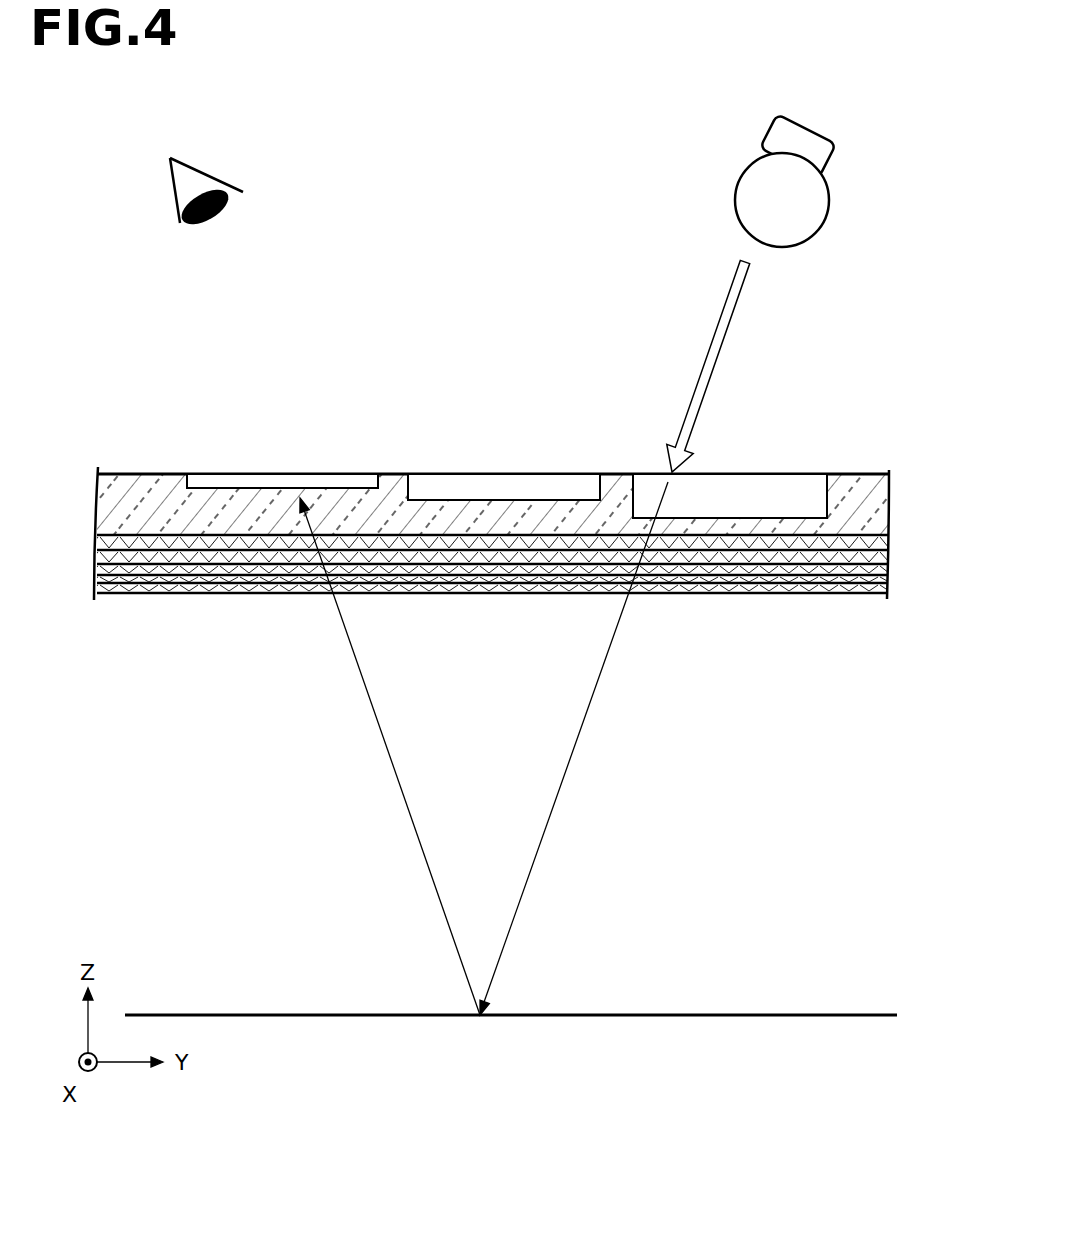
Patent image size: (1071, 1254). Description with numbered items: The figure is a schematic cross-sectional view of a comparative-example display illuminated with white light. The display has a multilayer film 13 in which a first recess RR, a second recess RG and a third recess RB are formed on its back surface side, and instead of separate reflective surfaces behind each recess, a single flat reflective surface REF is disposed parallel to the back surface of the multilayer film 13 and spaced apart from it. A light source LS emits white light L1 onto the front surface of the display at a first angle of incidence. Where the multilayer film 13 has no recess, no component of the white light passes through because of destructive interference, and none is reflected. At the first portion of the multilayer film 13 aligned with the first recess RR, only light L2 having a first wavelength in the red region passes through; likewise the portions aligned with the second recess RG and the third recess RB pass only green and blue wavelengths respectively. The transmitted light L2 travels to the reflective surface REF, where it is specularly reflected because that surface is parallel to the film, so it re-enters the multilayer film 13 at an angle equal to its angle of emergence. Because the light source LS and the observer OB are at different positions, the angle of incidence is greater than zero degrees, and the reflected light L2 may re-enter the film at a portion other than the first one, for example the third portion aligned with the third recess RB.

The multilayer film 13 is at (902, 475).
The third recess RB is at (281, 485).
The second recess RG is at (503, 488).
The first recess RR is at (796, 490).
The observer OB is at (192, 172).
The light source LS is at (735, 190).
The white light L1 is at (698, 348).
The light having a first wavelength in the red region L2 is at (398, 782).
The flat reflective surface REF is at (817, 1012).